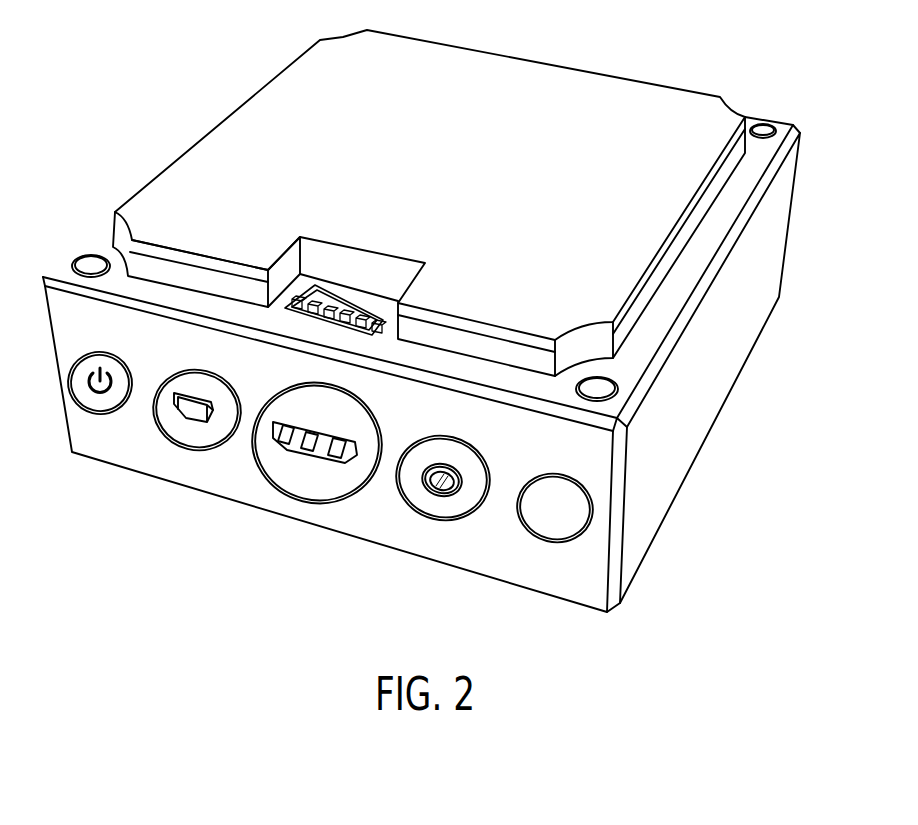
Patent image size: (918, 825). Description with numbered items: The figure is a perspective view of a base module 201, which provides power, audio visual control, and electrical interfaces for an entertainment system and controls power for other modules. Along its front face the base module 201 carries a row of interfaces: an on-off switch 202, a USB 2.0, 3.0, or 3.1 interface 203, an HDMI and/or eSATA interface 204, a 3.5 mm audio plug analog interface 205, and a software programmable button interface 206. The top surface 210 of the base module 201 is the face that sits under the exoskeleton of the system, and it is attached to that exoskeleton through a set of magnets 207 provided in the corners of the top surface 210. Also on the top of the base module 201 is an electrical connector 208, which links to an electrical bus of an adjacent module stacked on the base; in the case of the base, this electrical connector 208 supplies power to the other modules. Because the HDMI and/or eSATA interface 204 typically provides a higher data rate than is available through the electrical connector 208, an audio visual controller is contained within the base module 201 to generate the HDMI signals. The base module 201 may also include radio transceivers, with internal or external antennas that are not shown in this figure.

The base module 201 is at (375, 517).
The on-off switch 202 is at (102, 405).
The USB interface 203 is at (193, 415).
The HDMI and/or eSATA interface 204 is at (312, 458).
The round socket 205 is at (432, 495).
The software programmable button interface 206 is at (553, 522).
The magnets 207 is at (91, 263).
The electrical connector 208 is at (337, 280).
The top surface 210 is at (641, 95).